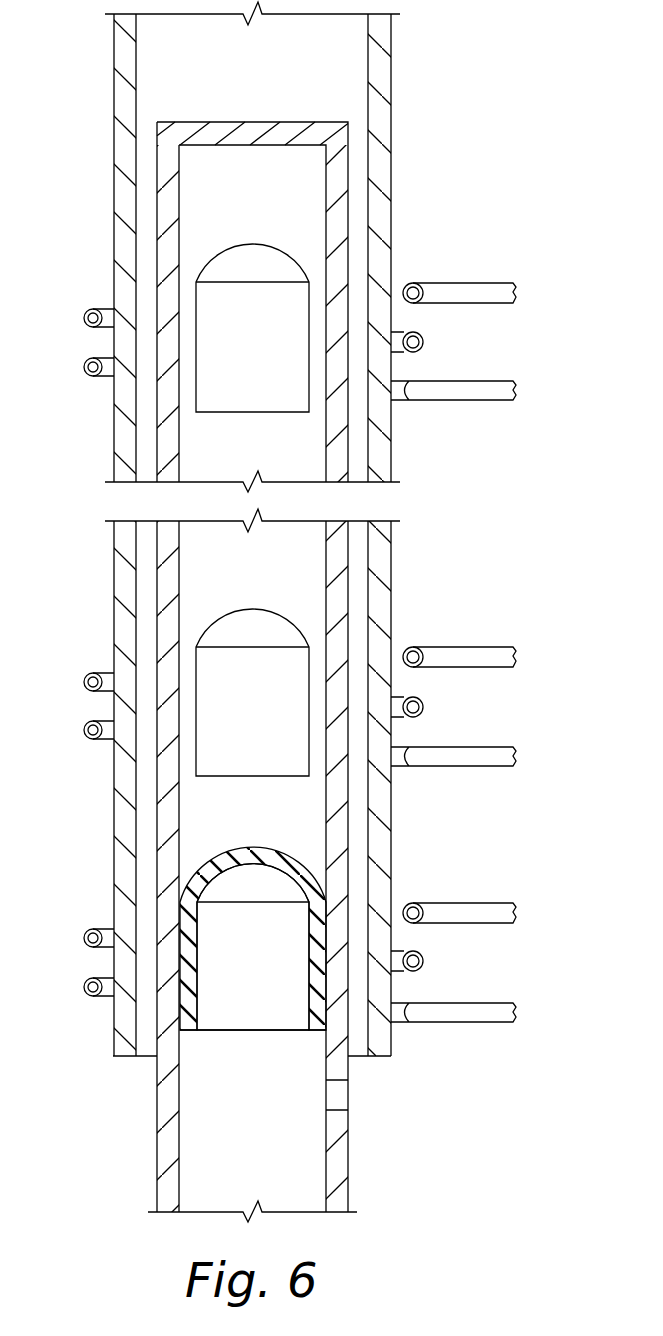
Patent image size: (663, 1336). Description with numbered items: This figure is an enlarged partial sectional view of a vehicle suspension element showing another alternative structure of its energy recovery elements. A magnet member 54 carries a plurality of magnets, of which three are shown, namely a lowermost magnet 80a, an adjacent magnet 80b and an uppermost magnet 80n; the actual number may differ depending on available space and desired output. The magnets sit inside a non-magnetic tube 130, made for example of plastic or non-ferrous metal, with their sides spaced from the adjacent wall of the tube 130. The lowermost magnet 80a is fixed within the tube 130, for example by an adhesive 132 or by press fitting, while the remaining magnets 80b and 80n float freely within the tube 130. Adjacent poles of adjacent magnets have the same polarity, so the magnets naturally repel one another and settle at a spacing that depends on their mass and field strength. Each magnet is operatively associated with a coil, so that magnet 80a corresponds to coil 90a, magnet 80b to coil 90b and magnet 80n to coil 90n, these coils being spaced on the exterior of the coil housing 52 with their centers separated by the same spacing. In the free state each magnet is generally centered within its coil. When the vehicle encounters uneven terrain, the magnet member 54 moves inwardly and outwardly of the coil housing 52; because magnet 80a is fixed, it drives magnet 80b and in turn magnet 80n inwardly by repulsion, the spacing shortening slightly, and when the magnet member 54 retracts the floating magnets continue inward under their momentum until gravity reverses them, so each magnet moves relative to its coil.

The coil housing 52 is at (391, 73).
The non-magnetic tube 130 is at (337, 557).
The magnet member 54 is at (349, 1165).
The magnet 80n is at (236, 355).
The magnet 80b is at (236, 719).
The lowermost magnet 80a is at (236, 975).
The coil 90n is at (423, 342).
The coil 90b is at (423, 707).
The coil 90a is at (423, 961).
The adhesive 132 is at (193, 915).